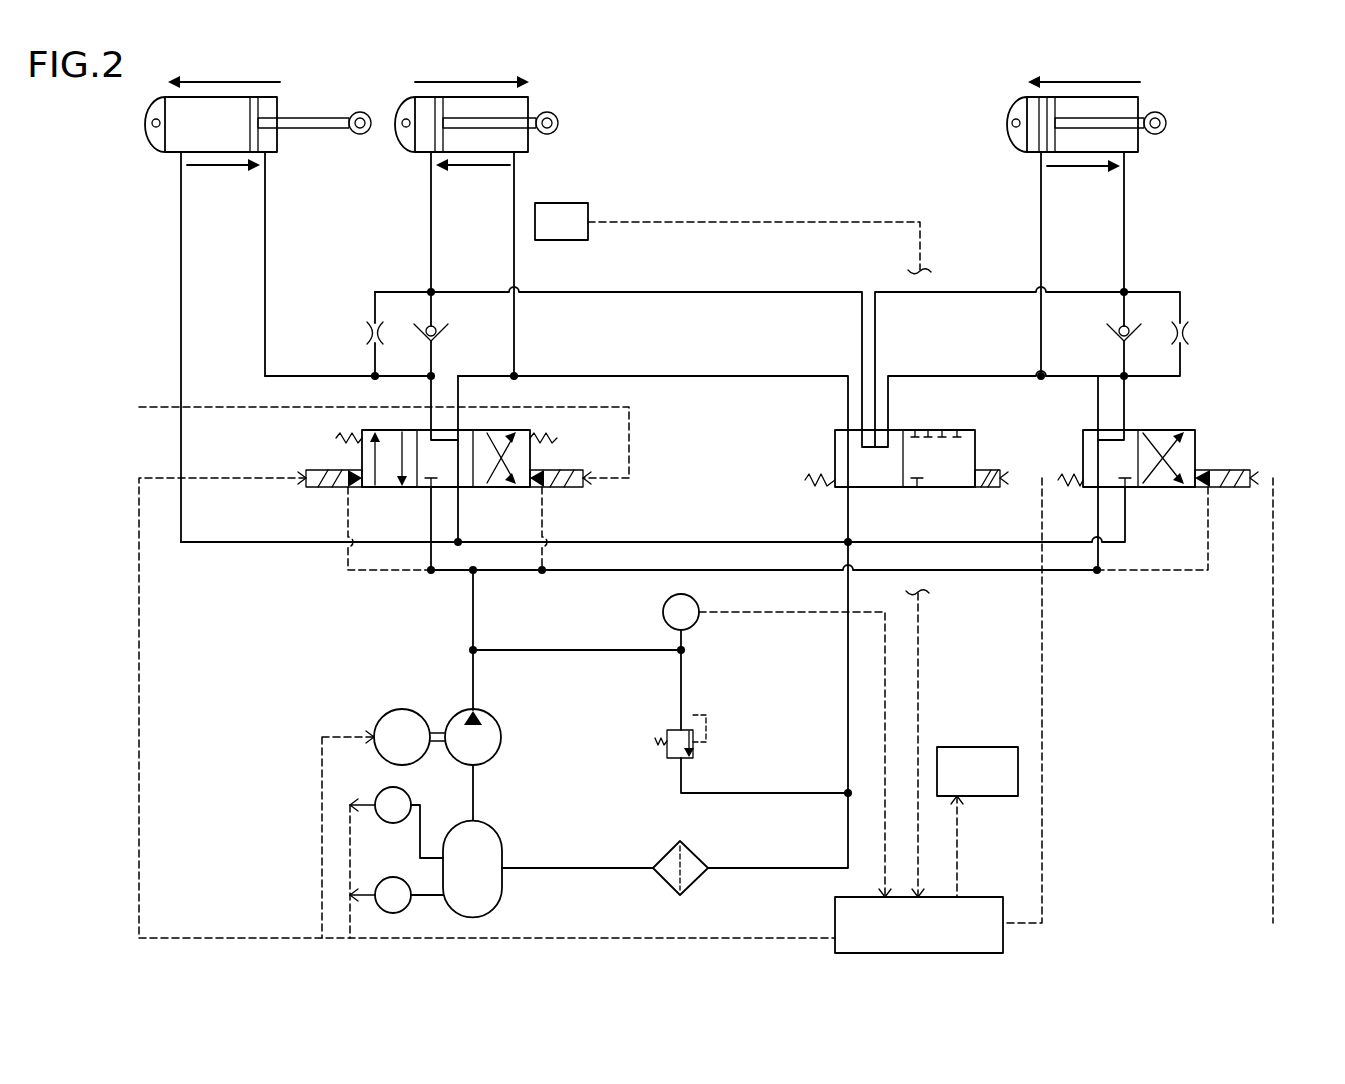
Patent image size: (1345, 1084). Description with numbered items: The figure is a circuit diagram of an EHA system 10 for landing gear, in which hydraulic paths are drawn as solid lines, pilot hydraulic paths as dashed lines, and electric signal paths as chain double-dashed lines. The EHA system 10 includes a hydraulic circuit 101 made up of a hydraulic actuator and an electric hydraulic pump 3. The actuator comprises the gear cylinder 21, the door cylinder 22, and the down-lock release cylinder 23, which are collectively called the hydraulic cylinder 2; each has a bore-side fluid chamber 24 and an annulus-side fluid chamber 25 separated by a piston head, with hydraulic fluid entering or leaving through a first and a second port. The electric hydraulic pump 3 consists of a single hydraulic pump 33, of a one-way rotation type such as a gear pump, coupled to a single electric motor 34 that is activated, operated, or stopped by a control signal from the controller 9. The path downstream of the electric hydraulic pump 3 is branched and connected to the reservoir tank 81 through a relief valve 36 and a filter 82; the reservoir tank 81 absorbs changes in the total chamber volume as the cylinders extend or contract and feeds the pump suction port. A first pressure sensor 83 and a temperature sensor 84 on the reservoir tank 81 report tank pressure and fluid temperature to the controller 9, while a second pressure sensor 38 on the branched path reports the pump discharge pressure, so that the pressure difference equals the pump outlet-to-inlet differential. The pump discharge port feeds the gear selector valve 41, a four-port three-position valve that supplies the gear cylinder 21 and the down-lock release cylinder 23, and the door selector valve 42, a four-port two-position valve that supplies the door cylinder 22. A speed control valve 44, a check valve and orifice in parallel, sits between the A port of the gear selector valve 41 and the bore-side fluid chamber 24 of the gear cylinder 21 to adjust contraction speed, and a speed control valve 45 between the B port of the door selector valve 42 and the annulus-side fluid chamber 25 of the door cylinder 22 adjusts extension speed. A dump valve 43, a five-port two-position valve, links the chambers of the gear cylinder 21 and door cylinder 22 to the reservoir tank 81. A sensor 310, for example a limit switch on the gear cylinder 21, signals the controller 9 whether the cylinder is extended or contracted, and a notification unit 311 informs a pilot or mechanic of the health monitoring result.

The EHA system 10 is at (1282, 88).
The hydraulic cylinder 2 is at (674, 124).
The gear cylinder 21 is at (530, 102).
The door cylinder 22 is at (1140, 102).
The down-lock release cylinder 23 is at (283, 102).
The bore-side fluid chamber 24 is at (176, 153).
The annulus-side fluid chamber 25 is at (276, 141).
The hydraulic circuit 101 is at (1153, 238).
The electric hydraulic pump 3 is at (408, 797).
The hydraulic pump 33 is at (462, 709).
The electric motor 34 is at (400, 708).
The relief valve 36 is at (689, 760).
The second pressure sensor 38 is at (666, 605).
The gear selector valve 41 is at (561, 497).
The door selector valve 42 is at (1212, 447).
The dump valve 43 is at (810, 447).
The speed control valve 44 is at (358, 305).
The speed control valve 45 is at (1200, 330).
The reservoir tank 81 is at (505, 845).
The filter 82 is at (695, 880).
The first pressure sensor 83 is at (412, 800).
The temperature sensor 84 is at (391, 877).
The controller 9 is at (835, 910).
The sensor 310 is at (568, 240).
The notification unit 311 is at (978, 747).